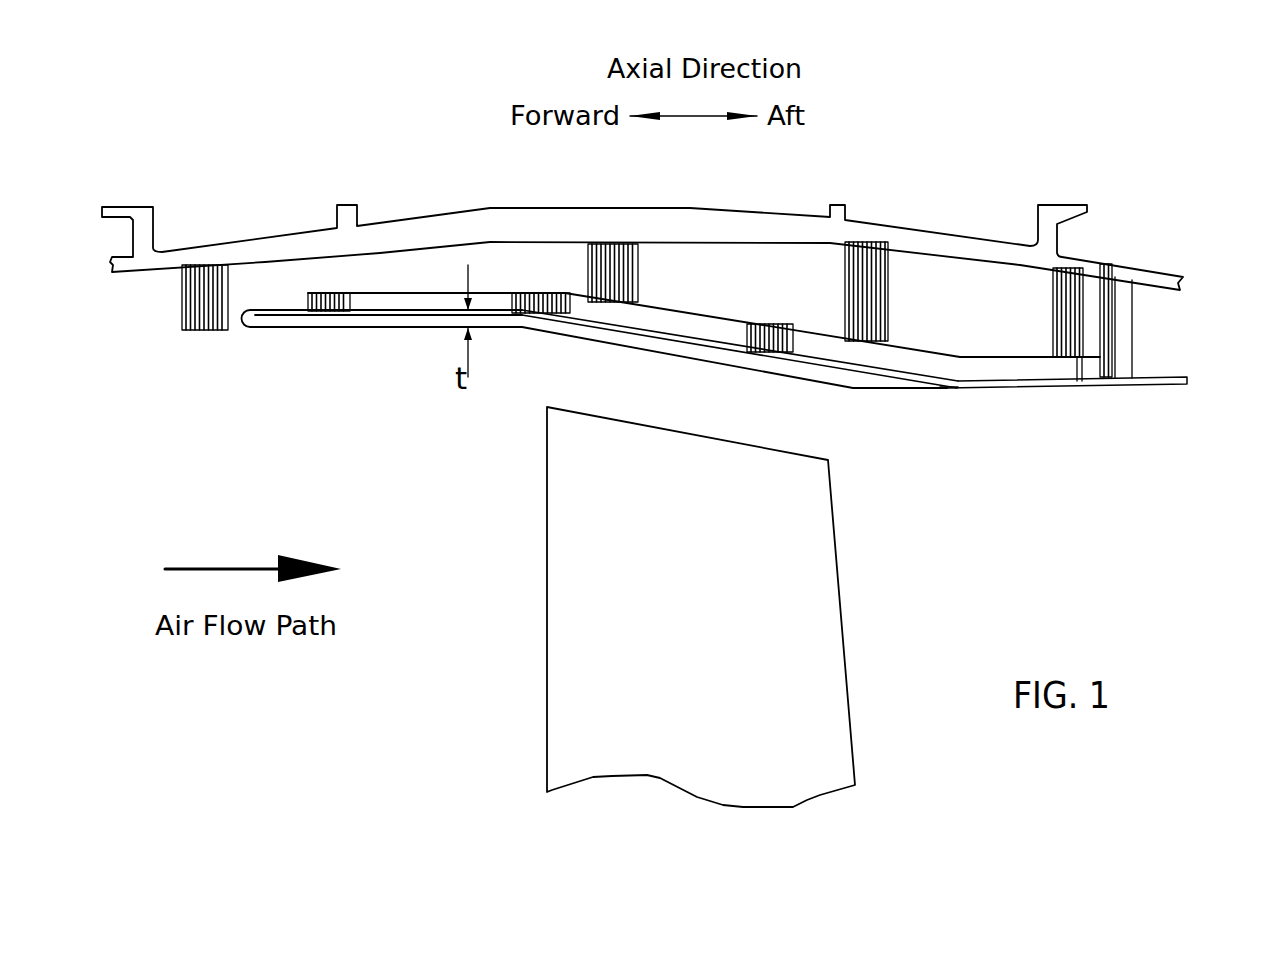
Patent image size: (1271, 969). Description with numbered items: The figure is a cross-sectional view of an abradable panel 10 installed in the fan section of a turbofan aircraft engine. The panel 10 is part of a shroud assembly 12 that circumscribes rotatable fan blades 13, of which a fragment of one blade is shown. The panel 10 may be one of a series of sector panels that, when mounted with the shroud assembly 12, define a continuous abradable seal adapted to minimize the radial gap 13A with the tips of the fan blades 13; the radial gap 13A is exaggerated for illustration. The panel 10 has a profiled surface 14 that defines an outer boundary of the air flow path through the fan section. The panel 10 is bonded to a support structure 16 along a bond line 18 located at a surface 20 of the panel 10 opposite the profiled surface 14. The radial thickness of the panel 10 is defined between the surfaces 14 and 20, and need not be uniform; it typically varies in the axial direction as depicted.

The abradable panel 10 is at (352, 322).
The shroud assembly 12 is at (990, 185).
The rotatable blades 13 is at (695, 621).
The radial gap 13A is at (590, 378).
The profiled surface 14 is at (732, 367).
The support structure 16 is at (898, 355).
The bond line 18 is at (907, 386).
The surface 20 is at (665, 340).